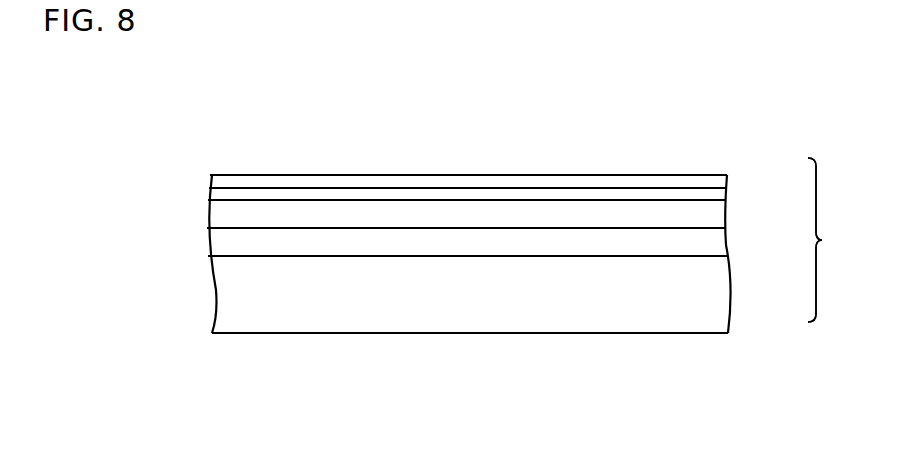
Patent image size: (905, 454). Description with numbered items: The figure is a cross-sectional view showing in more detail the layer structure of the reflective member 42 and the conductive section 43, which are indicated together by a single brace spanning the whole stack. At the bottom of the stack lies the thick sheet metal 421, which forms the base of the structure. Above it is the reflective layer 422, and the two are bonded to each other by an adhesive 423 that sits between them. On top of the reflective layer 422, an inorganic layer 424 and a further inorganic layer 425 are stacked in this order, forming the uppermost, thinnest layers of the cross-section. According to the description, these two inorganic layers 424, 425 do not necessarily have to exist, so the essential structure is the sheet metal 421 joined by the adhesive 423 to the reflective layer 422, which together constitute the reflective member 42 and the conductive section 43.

The reflective member 42 is at (549, 245).
The conductive section 43 is at (849, 240).
The sheet metal 421 is at (716, 313).
The reflective layer 422 is at (718, 216).
The adhesive 423 is at (718, 243).
The inorganic layer 424 is at (720, 193).
The inorganic layer 425 is at (722, 179).